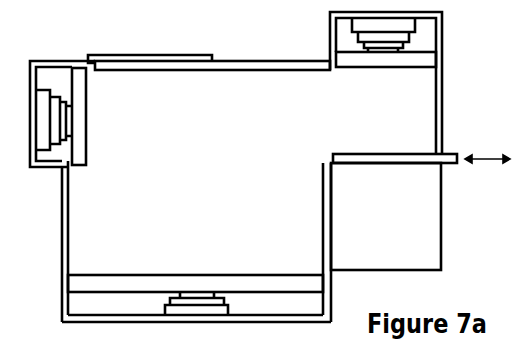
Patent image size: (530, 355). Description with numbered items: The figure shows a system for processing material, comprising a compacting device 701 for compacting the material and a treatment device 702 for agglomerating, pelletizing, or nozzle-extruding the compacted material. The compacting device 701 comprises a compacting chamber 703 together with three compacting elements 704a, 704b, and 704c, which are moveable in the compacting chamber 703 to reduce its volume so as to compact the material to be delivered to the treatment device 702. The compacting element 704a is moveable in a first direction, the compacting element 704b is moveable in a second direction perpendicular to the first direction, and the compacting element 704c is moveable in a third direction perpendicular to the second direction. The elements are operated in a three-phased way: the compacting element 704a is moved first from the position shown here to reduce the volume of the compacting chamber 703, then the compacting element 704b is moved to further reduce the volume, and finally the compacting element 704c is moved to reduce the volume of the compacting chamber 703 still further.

The compacting device 701 is at (280, 60).
The treatment device 702 is at (412, 224).
The compacting chamber 703 is at (250, 188).
The compacting element 704a is at (100, 275).
The compacting element 704b is at (87, 156).
The compacting element 704c is at (408, 70).